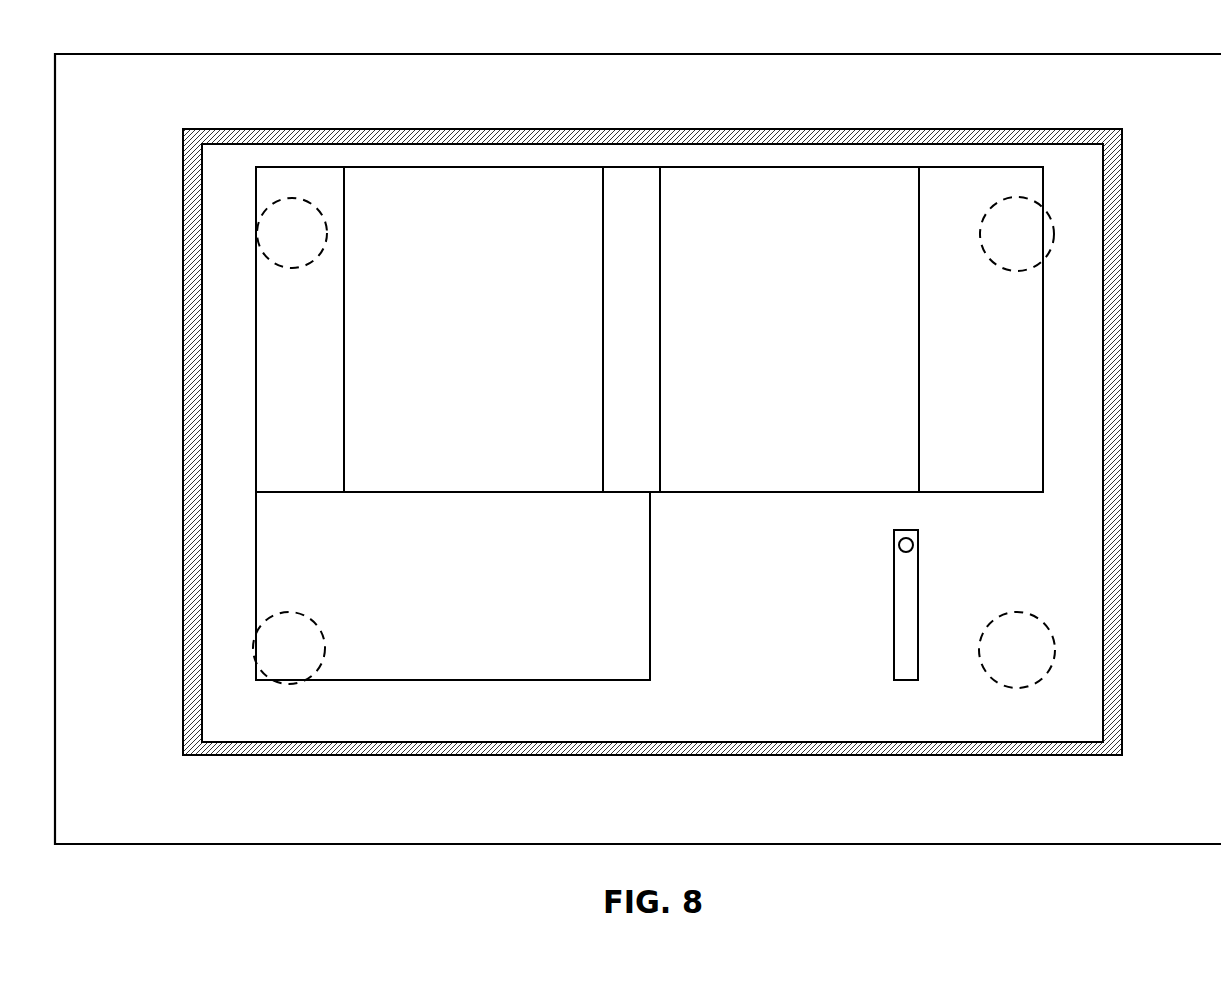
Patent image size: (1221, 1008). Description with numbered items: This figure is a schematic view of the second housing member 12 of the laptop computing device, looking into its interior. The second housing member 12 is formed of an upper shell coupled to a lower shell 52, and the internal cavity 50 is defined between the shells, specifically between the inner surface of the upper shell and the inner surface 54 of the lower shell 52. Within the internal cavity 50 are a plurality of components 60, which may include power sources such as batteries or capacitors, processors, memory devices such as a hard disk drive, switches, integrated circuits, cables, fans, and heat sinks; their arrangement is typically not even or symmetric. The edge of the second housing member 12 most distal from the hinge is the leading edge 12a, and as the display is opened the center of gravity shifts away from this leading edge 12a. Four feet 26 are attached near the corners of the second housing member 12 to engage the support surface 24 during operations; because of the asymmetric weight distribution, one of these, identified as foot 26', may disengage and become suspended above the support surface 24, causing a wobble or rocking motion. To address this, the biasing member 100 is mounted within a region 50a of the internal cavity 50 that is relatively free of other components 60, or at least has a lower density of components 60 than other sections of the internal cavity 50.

The support surface 24 is at (1127, 67).
The second housing member 12 is at (175, 164).
The leading edge 12a is at (552, 766).
The internal cavity 50 is at (215, 357).
The region 50a is at (804, 715).
The lower shell 52 is at (1122, 275).
The inner surface 54 is at (1078, 418).
The components 60 is at (311, 167).
The feet 26 is at (654, 467).
The foot 26' is at (1006, 668).
The biasing member 100 is at (942, 576).